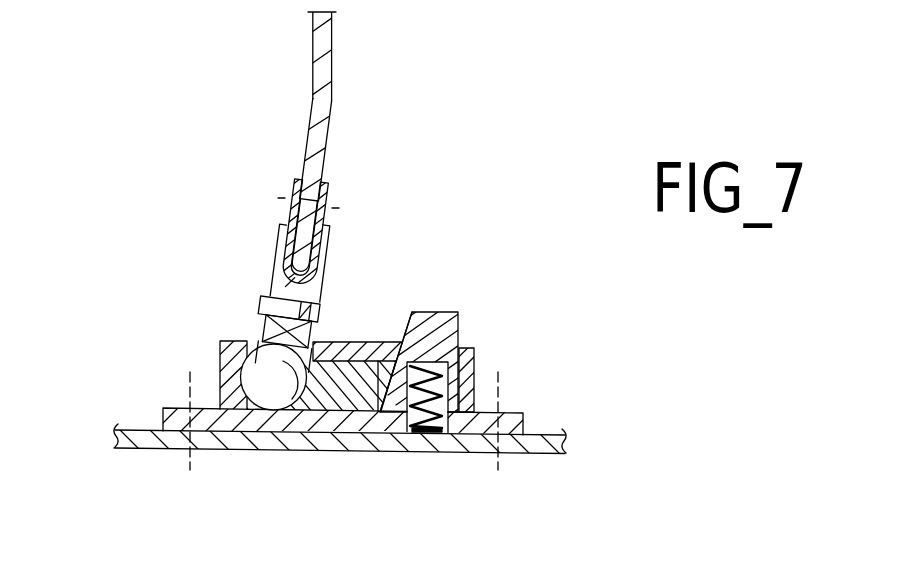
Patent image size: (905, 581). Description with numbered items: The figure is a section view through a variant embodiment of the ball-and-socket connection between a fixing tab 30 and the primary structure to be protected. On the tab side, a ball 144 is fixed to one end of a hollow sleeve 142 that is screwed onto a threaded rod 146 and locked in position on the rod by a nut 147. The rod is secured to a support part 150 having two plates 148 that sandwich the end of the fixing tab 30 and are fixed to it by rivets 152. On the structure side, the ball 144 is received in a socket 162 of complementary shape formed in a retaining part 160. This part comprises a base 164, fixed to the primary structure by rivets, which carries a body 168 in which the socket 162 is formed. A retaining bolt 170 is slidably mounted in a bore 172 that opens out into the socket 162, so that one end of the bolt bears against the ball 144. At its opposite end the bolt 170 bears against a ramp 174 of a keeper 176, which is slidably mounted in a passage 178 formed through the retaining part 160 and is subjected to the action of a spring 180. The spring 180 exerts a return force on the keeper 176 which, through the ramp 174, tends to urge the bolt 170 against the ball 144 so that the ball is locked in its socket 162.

The fixing tab 30 is at (323, 62).
The hollow sleeve 142 is at (262, 333).
The ball 144 is at (258, 380).
The threaded rod 146 is at (277, 264).
The nut 147 is at (320, 300).
The plates 148 is at (324, 218).
The support part 150 is at (297, 218).
The rivets 152 is at (295, 184).
The retaining part 160 is at (230, 433).
The socket 162 is at (246, 404).
The base 164 is at (163, 411).
The body 168 is at (220, 347).
The retaining bolt 170 is at (338, 400).
The bore 172 is at (349, 365).
The ramp 174 is at (400, 332).
The keeper 176 is at (437, 337).
The passage 178 is at (388, 425).
The spring 180 is at (450, 392).